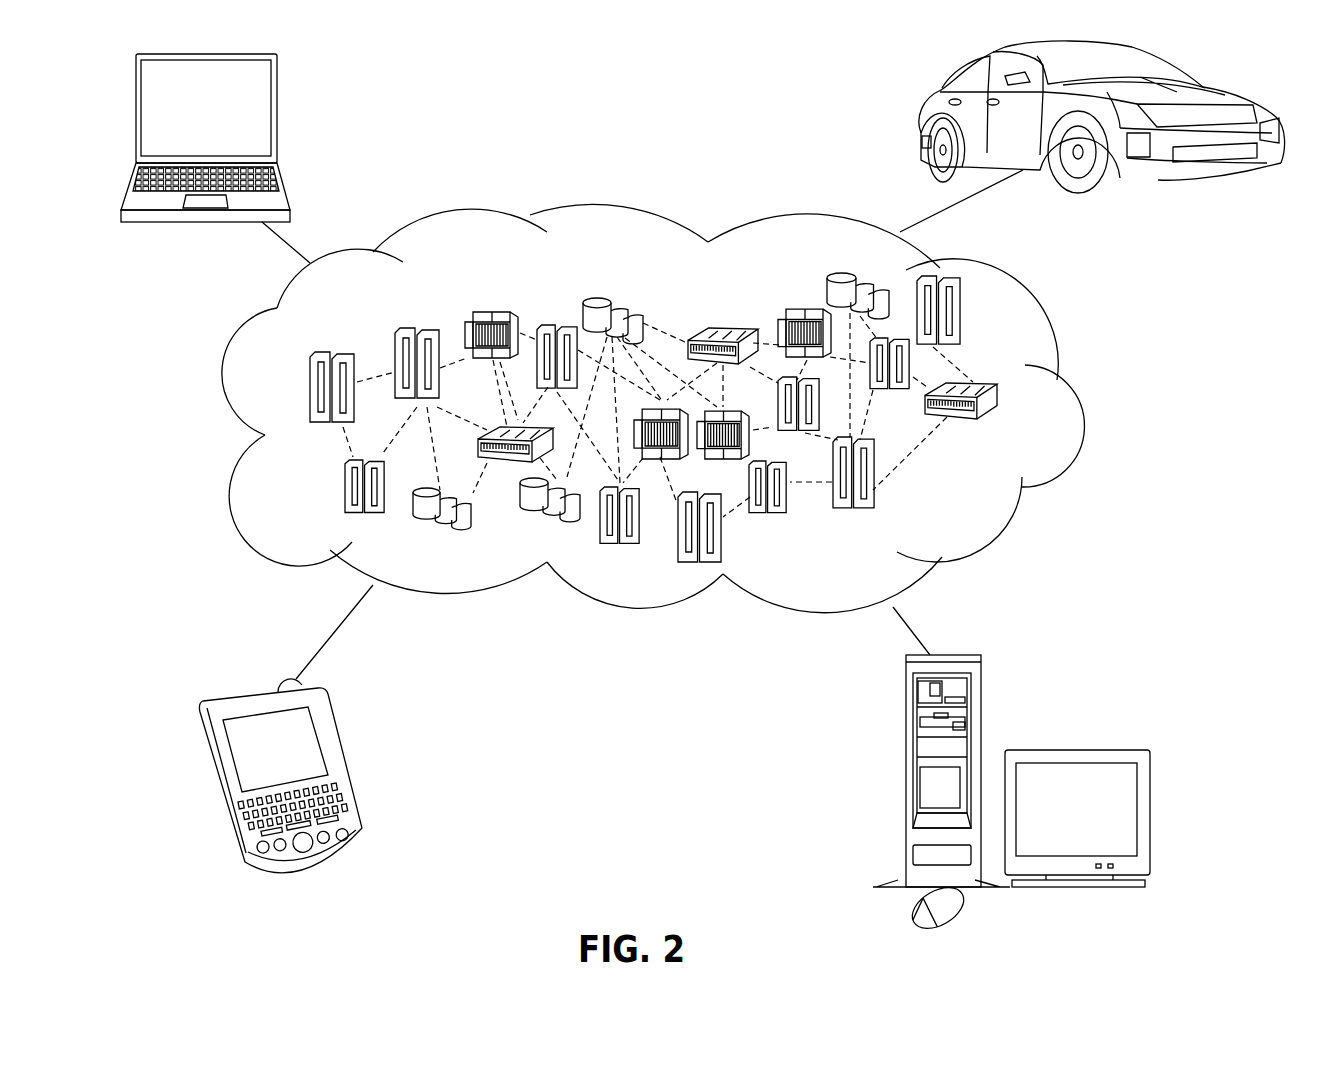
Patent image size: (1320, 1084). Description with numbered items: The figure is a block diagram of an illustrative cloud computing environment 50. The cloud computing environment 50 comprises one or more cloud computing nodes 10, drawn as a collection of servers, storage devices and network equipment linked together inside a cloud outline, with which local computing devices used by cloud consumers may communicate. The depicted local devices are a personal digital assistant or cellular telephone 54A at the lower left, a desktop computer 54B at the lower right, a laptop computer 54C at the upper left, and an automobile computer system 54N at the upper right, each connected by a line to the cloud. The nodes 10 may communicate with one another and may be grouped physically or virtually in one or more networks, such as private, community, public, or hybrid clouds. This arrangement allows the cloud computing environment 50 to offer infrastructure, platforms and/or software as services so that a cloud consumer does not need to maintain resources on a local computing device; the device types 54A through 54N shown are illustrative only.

The cloud computing node 10 is at (985, 508).
The cloud computing environment 50 is at (1072, 402).
The personal digital assistant or cellular telephone 54A is at (334, 732).
The desktop computer 54B is at (905, 716).
The laptop computer 54C is at (277, 93).
The automobile computer system 54N is at (920, 108).